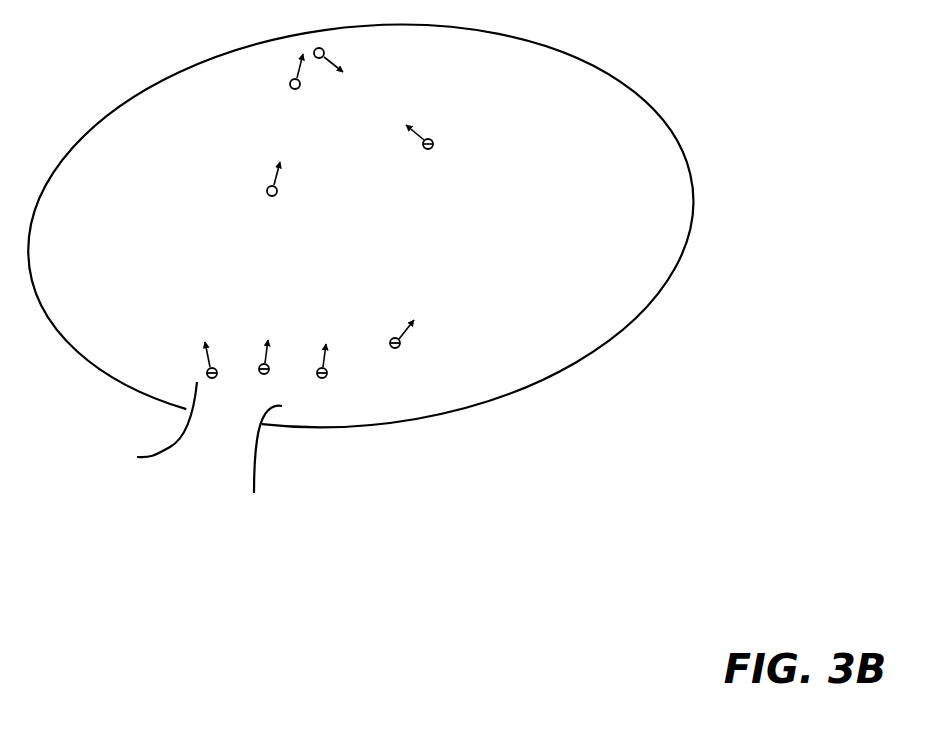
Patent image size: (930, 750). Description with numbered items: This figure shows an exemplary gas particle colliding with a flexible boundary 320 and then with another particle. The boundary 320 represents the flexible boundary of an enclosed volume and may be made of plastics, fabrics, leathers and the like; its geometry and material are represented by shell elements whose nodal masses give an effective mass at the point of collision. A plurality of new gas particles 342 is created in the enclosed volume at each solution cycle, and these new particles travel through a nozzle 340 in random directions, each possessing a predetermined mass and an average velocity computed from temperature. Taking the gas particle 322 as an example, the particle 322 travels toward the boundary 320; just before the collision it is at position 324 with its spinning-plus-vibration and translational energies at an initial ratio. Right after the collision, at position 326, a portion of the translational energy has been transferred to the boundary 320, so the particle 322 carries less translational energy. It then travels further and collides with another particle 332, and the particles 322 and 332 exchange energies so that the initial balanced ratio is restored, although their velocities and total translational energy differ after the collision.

The flexible boundary 320 is at (599, 72).
The gas particle 322 is at (248, 194).
The position 324 is at (273, 84).
The position 326 is at (343, 53).
The particle 332 is at (442, 147).
The nozzle 340 is at (223, 473).
The new gas particles 342 is at (333, 390).